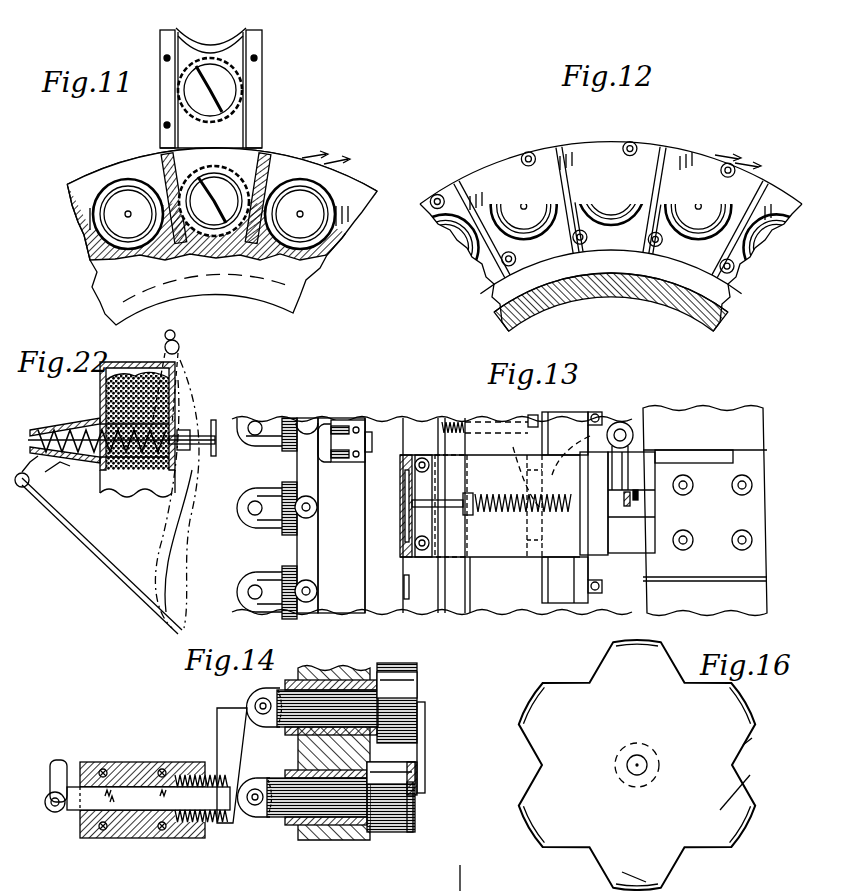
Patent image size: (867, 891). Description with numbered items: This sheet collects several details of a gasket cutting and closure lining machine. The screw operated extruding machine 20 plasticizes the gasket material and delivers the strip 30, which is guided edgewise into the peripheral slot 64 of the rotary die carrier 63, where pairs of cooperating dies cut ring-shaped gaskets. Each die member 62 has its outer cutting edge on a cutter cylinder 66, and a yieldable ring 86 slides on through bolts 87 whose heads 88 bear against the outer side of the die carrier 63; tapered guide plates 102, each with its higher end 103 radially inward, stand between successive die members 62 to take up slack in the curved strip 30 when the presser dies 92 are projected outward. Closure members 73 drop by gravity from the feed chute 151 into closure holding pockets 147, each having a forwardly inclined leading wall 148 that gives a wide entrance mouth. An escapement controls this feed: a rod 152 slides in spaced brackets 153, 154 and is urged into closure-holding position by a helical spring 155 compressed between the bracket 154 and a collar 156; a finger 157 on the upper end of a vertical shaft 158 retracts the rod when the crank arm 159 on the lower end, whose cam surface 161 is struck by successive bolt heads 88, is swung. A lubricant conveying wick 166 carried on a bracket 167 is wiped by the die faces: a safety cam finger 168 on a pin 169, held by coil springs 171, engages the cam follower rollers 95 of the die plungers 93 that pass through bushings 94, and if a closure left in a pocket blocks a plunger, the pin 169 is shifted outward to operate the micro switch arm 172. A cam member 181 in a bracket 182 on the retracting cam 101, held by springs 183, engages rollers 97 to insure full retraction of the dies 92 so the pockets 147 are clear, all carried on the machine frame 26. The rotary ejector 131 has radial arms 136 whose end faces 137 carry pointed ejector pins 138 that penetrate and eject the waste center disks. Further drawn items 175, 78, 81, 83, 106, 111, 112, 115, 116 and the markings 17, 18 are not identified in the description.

In FIG. 11, the closure holding pocket 147 is at (88, 200).
In FIG. 13, the closure holding pocket 147 is at (403, 583).
In FIG. 14, the closure holding pocket 147 is at (414, 822).
In FIG. 11, the leading wall 148 is at (162, 173).
In FIG. 11, the die member 62 is at (108, 222).
In FIG. 12, the die member 62 is at (515, 200).
In FIG. 11, the closure member 73 is at (197, 97).
In FIG. 11, the feed chute 151 is at (258, 69).
In FIG. 13, the feed chute 151 is at (400, 545).
In FIG. 11, the rod 152 is at (230, 50).
In FIG. 13, the rod 152 is at (452, 516).
In FIG. 11, the rotary die carrier 63 is at (302, 280).
In FIG. 12, the rotary die carrier 63 is at (588, 296).
In FIG. 13, the rotary die carrier 63 is at (378, 598).
In FIG. 14, the rotary die carrier 63 is at (336, 830).
In FIG. 12, the yieldable ring 86 is at (450, 204).
In FIG. 13, the yieldable ring 86 is at (446, 452).
In FIG. 12, the tapered guide plates 102 is at (560, 230).
In FIG. 12, the higher end 103 is at (578, 240).
In FIG. 12, the heads 88 is at (530, 151).
In FIG. 13, the heads 88 is at (553, 397).
In FIG. 12, the peripheral slot 64 is at (512, 287).
In FIG. 22, the screw operated extruding machine 20 is at (78, 408).
In FIG. 22, the strip 30 is at (82, 540).
In FIG. 13, the cam follower rollers 95 is at (246, 446).
In FIG. 14, the cam follower rollers 95 is at (258, 712).
In FIG. 13, the die plungers 93 is at (270, 446).
In FIG. 14, the die plungers 93 is at (277, 818).
In FIG. 13, the retracting cam 101 is at (345, 610).
In FIG. 13, the rollers 97 is at (312, 517).
In FIG. 13, the cam member 181 is at (322, 430).
In FIG. 13, the bracket 182 is at (356, 426).
In FIG. 13, the springs 183 is at (330, 458).
In FIG. 13, the guide roller 175 is at (424, 458).
In FIG. 13, the bracket 153 is at (440, 600).
In FIG. 13, the through bolts 87 is at (486, 416).
In FIG. 13, the cutter cylinder 66 is at (470, 606).
In FIG. 13, the helical spring 155 is at (490, 523).
In FIG. 13, the collar 156 is at (468, 494).
In FIG. 13, the cam surface 161 is at (515, 450).
In FIG. 13, the crank arm 159 is at (565, 433).
In FIG. 13, the roller pin 78 is at (598, 412).
In FIG. 13, the wall 81 is at (595, 596).
In FIG. 13, the rail 83 is at (560, 606).
In FIG. 13, the bracket 154 is at (596, 545).
In FIG. 13, the finger 157 is at (622, 468).
In FIG. 13, the vertical shaft 158 is at (618, 428).
In FIG. 13, the machine frame 26 is at (755, 426).
In FIG. 14, the machine frame 26 is at (462, 866).
In FIG. 14, the pin 169 is at (128, 810).
In FIG. 14, the micro switch arm 172 is at (50, 780).
In FIG. 14, the coil springs 171 is at (196, 775).
In FIG. 14, the safety cam finger 168 is at (220, 730).
In FIG. 14, the bushings 94 is at (288, 694).
In FIG. 14, the presser dies 92 is at (402, 688).
In FIG. 14, the bracket 167 is at (424, 745).
In FIG. 14, the lubricant conveying wick 166 is at (418, 785).
In FIG. 14, the part 111 is at (226, 884).
In FIG. 14, the part 112 is at (292, 884).
In FIG. 14, the part 116 is at (322, 890).
In FIG. 14, the part 115 is at (382, 890).
In FIG. 16, the rotary ejector 131 is at (582, 760).
In FIG. 16, the ejector pins 138 is at (748, 702).
In FIG. 16, the end faces 137 is at (752, 712).
In FIG. 16, the radial arms 136 is at (705, 812).
In FIG. 16, the section line 17 is at (497, 682).
In FIG. 16, the section line 18 is at (553, 659).
In FIG. 16, the part 106 is at (490, 879).